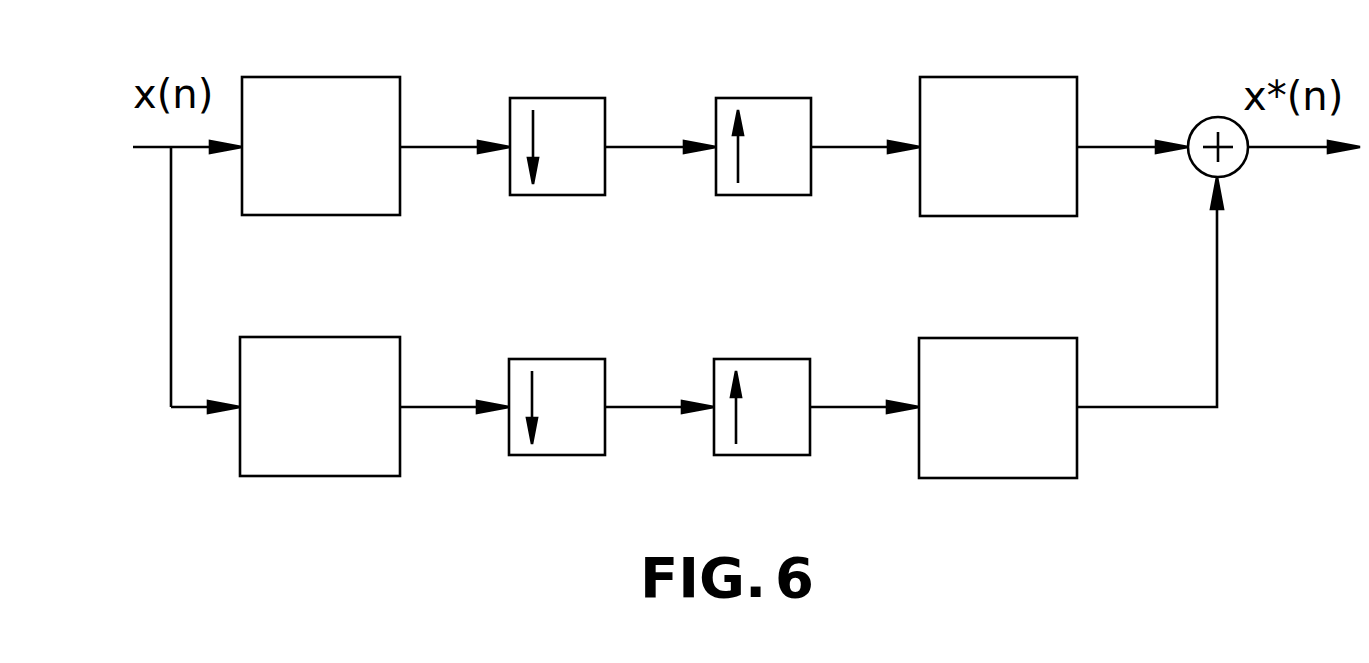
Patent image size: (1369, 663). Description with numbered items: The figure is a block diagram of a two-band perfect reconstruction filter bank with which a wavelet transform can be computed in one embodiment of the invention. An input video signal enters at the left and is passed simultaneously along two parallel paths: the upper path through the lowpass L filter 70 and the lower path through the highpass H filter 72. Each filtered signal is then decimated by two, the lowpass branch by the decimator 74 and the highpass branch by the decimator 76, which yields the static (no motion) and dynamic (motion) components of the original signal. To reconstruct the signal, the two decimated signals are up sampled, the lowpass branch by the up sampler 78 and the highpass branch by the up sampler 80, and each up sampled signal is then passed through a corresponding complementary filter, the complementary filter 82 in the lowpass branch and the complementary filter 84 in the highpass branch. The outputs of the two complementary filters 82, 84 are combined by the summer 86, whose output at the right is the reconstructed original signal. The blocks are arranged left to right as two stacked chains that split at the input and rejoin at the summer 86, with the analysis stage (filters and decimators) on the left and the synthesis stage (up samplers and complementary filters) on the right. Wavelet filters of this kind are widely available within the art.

The lowpass L filter 70 is at (322, 77).
The highpass H filter 72 is at (320, 337).
The decimator 74 is at (557, 98).
The decimator 76 is at (557, 359).
The up sampler 78 is at (762, 98).
The up sampler 80 is at (762, 359).
The complementary filter 82 is at (998, 77).
The complementary filter 84 is at (997, 337).
The summer 86 is at (1241, 167).